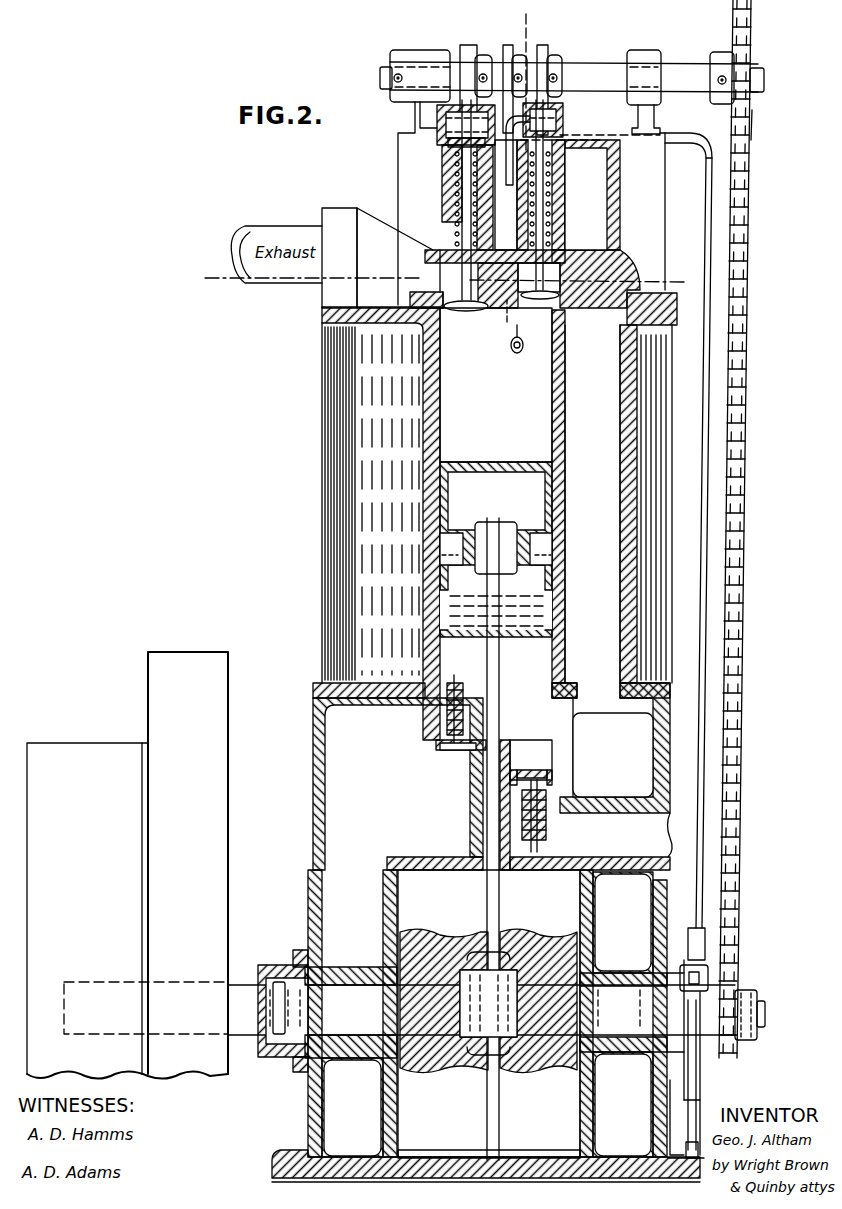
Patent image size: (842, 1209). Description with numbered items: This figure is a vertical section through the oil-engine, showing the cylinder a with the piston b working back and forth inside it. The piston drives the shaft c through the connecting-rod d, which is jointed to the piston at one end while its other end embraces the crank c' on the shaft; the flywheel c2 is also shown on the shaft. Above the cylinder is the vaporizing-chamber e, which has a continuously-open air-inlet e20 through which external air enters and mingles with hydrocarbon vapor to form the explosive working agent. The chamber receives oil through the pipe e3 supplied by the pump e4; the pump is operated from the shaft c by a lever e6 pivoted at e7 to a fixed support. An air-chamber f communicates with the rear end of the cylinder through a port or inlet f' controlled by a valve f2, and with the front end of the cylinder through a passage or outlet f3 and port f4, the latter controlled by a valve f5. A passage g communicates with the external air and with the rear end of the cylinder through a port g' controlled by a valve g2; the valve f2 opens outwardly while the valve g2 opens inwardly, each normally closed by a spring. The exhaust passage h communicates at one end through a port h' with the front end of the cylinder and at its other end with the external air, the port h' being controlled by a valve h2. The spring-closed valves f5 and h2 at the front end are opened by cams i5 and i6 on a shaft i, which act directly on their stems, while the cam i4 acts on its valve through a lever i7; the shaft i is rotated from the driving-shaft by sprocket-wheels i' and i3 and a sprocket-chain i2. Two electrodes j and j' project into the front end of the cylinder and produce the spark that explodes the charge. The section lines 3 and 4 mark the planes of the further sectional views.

The section line 3 3 is at (441, 280).
The section line 4 4 is at (520, 172).
The shaft i is at (572, 89).
The cam i6 is at (468, 52).
The cam i4 is at (508, 52).
The cam i5 is at (545, 52).
The sprocket-chain i2 is at (745, 414).
The sprocket-wheel i3 is at (752, 125).
The sprocket-wheel i' is at (753, 1027).
The lever i7 is at (511, 150).
The air-inlet e20 is at (548, 124).
The vaporizing-chamber e is at (603, 220).
The pipe e3 is at (706, 258).
The pump e4 is at (687, 955).
The lever e6 is at (698, 1060).
The pivot e7 is at (694, 1130).
The exhaust passage h is at (484, 204).
The port h' is at (406, 258).
The valve h2 is at (464, 312).
The port f4 is at (548, 292).
The valve f5 is at (538, 300).
The cylinder a is at (422, 410).
The passage or outlet f3 is at (592, 504).
The electrode j is at (507, 360).
The electrode j' is at (526, 354).
The piston b is at (440, 500).
The connecting-rod d is at (500, 674).
The air-chamber f is at (475, 776).
The port or inlet f' is at (420, 718).
The valve f2 is at (447, 750).
The valve g2 is at (526, 805).
The port g' is at (540, 816).
The passage g is at (590, 846).
The fly wheel c2 is at (127, 865).
The shaft c is at (512, 1013).
The crank c' is at (489, 1043).